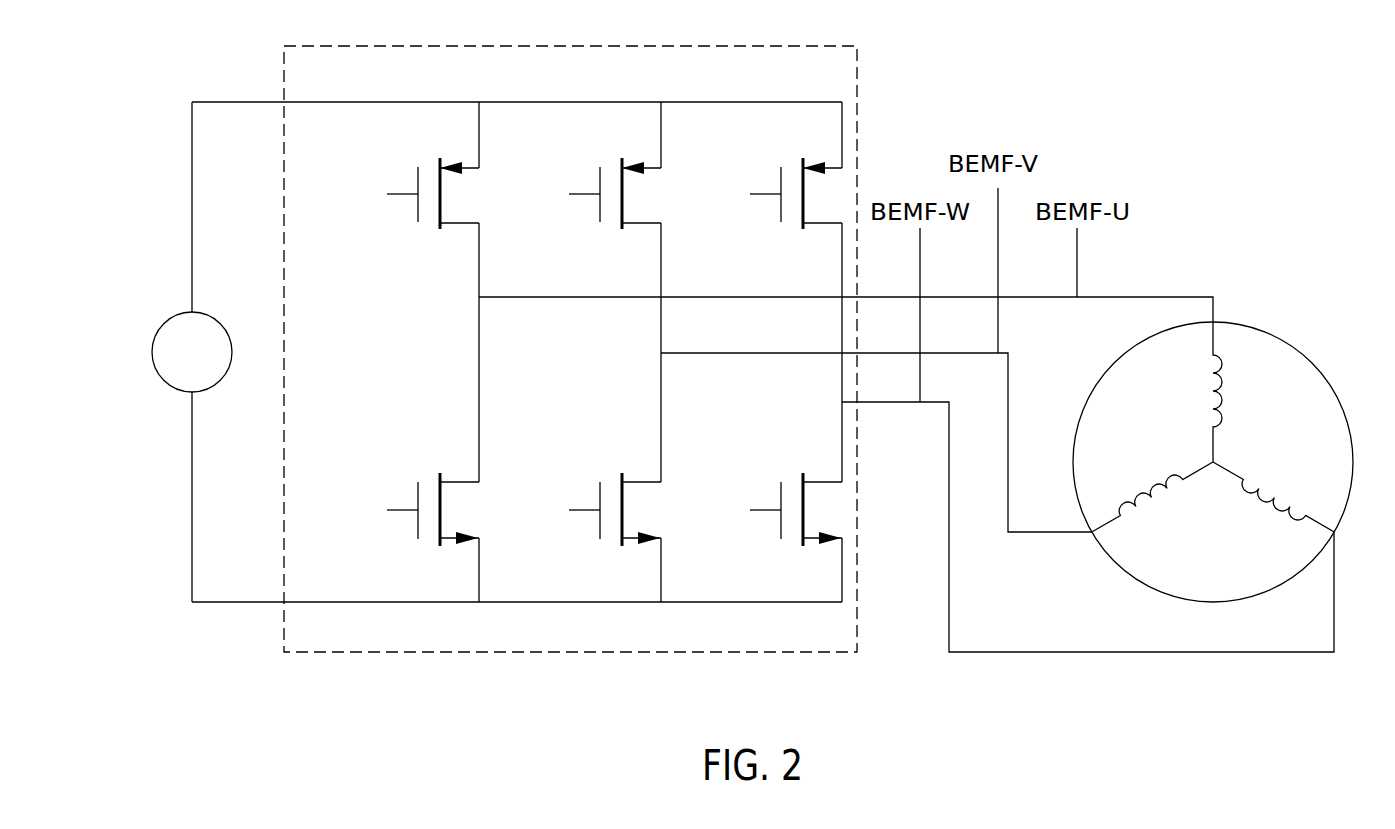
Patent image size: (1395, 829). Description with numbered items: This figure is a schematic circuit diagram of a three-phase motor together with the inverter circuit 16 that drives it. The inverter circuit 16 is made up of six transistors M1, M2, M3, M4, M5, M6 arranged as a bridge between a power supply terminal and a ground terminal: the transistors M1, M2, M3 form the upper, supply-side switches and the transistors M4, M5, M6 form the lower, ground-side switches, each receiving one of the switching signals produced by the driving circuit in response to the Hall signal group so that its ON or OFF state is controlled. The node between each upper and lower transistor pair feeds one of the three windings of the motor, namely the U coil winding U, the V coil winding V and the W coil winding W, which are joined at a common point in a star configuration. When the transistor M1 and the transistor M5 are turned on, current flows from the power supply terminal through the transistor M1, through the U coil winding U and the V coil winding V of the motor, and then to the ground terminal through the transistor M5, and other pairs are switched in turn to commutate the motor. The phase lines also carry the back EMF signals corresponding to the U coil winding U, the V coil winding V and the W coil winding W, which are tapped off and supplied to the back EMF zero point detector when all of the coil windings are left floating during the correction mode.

The inverter circuit 16 is at (606, 349).
The transistor M1 is at (409, 189).
The transistor M2 is at (591, 189).
The transistor M3 is at (772, 189).
The transistor M4 is at (409, 412).
The transistor M5 is at (591, 412).
The transistor M6 is at (772, 412).
The U coil winding U is at (1226, 375).
The V coil winding V is at (1139, 509).
The W coil winding W is at (1291, 512).